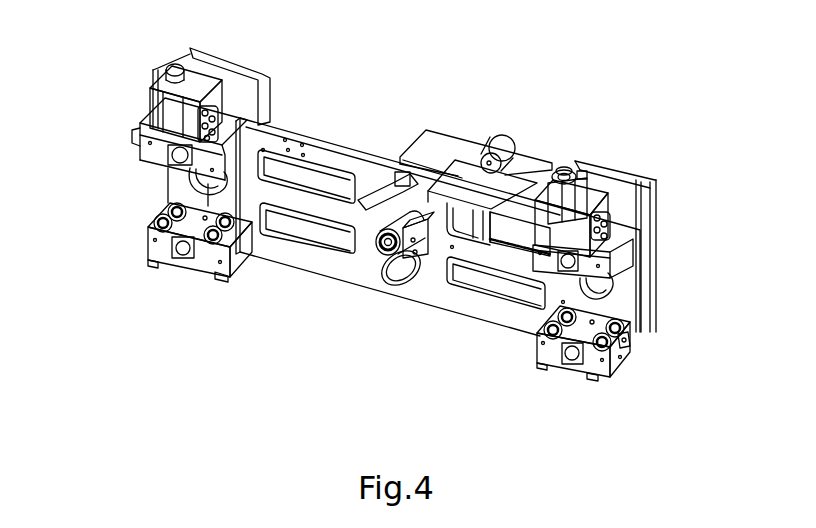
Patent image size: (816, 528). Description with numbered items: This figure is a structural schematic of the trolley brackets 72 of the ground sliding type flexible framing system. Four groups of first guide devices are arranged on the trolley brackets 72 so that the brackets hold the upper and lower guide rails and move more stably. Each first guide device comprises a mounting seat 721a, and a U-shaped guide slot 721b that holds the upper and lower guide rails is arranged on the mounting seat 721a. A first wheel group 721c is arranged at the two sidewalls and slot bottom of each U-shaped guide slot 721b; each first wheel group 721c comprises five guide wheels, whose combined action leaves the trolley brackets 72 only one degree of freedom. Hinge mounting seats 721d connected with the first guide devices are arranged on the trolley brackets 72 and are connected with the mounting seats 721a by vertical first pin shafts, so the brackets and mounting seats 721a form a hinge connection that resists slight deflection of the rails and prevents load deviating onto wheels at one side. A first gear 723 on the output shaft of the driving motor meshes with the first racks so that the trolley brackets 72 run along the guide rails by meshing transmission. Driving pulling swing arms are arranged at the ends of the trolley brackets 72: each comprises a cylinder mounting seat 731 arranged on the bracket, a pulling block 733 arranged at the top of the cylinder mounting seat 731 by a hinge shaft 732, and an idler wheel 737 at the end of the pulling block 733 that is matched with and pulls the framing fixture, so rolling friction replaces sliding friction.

The trolley bracket 72 is at (393, 119).
The mounting seat 721a is at (146, 155).
The U-shaped guide slot 721b is at (630, 342).
The first wheel group 721c is at (160, 221).
The hinge mounting seat 721d is at (204, 268).
The first gear 723 is at (386, 262).
The cylinder mounting seat 731 is at (655, 176).
The hinge shaft 732 is at (454, 173).
The pulling block 733 is at (580, 164).
The idler wheel 737 is at (562, 168).